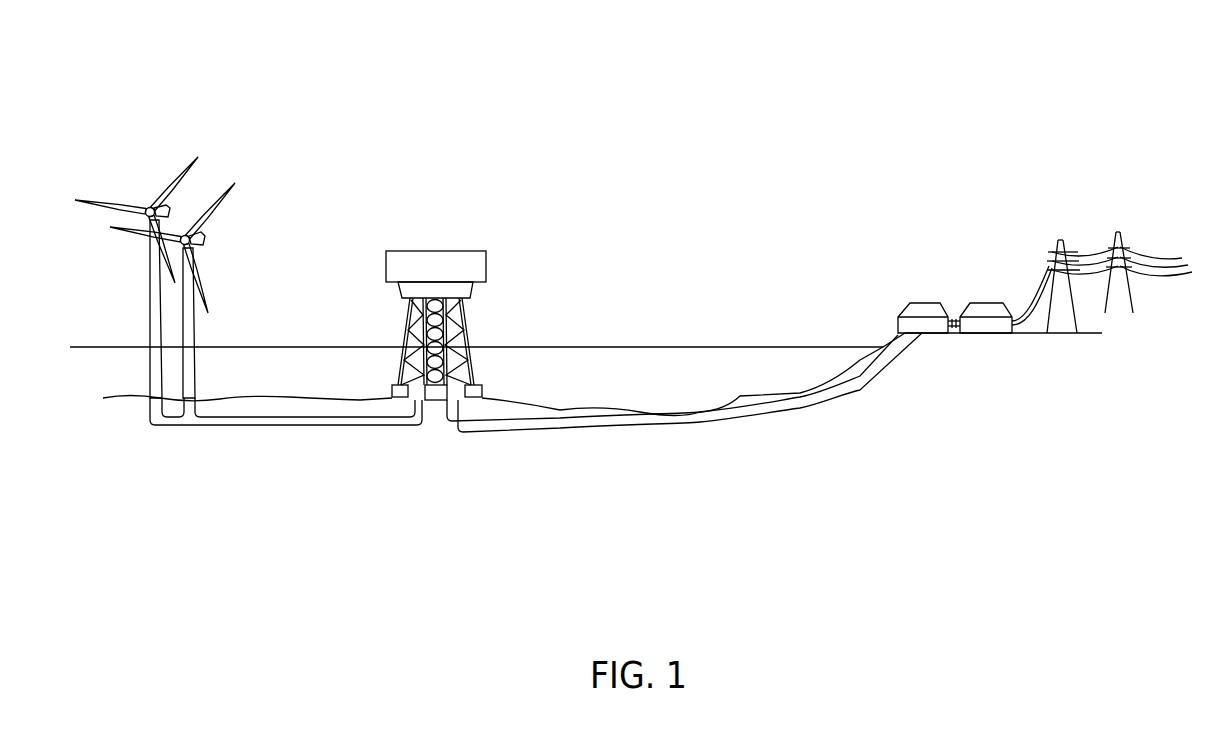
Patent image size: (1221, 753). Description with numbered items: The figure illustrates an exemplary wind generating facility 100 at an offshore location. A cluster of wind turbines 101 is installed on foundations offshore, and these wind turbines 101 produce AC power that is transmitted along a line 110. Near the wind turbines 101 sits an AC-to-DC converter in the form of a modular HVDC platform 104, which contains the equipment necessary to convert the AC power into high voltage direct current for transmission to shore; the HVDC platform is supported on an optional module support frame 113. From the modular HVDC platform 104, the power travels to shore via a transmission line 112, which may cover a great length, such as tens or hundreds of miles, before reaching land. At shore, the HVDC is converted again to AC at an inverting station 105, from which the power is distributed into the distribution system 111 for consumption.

The wind generating facility 100 is at (152, 78).
The wind turbines 101 is at (150, 281).
The modular HVDC platform 104 is at (487, 285).
The inverting station 105 is at (907, 268).
The line 110 is at (293, 425).
The distribution system 111 is at (1086, 195).
The transmission line 112 is at (608, 430).
The module support frame 113 is at (473, 292).